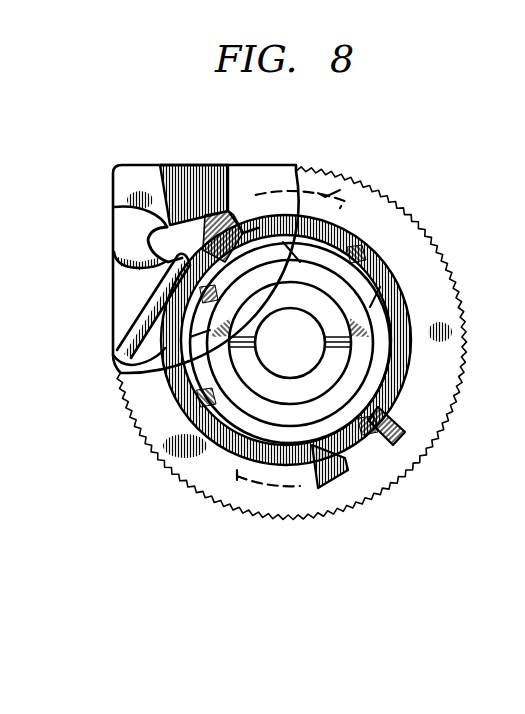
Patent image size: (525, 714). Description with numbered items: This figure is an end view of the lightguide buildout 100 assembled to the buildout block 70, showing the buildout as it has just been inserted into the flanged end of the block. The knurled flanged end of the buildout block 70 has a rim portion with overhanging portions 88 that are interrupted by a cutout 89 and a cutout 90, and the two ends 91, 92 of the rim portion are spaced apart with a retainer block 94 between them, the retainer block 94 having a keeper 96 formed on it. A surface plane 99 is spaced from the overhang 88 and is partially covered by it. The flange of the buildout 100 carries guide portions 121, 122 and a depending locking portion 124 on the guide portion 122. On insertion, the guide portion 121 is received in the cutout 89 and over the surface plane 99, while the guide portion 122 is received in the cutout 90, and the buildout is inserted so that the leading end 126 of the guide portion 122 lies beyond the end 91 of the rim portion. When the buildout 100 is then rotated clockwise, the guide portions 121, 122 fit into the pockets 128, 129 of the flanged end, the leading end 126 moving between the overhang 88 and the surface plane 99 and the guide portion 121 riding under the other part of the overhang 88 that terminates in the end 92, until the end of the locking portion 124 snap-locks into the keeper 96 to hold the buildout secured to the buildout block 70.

The buildout block 70 is at (382, 187).
The overhanging portions 88 is at (300, 480).
The cutout 89 is at (340, 475).
The cutout 90 is at (203, 165).
The end of rim portion 91 is at (226, 163).
The end of rim portion 92 is at (130, 407).
The retainer block 94 is at (122, 165).
The keeper 96 is at (140, 258).
The surface plane 99 is at (180, 165).
The lightguide buildout 100 is at (375, 297).
The guide portion 121 is at (390, 453).
The guide portion 122 is at (145, 205).
The locking portion 124 is at (133, 333).
The end of guide portion 126 is at (250, 190).
The pocket 128 is at (258, 517).
The pocket 129 is at (360, 180).